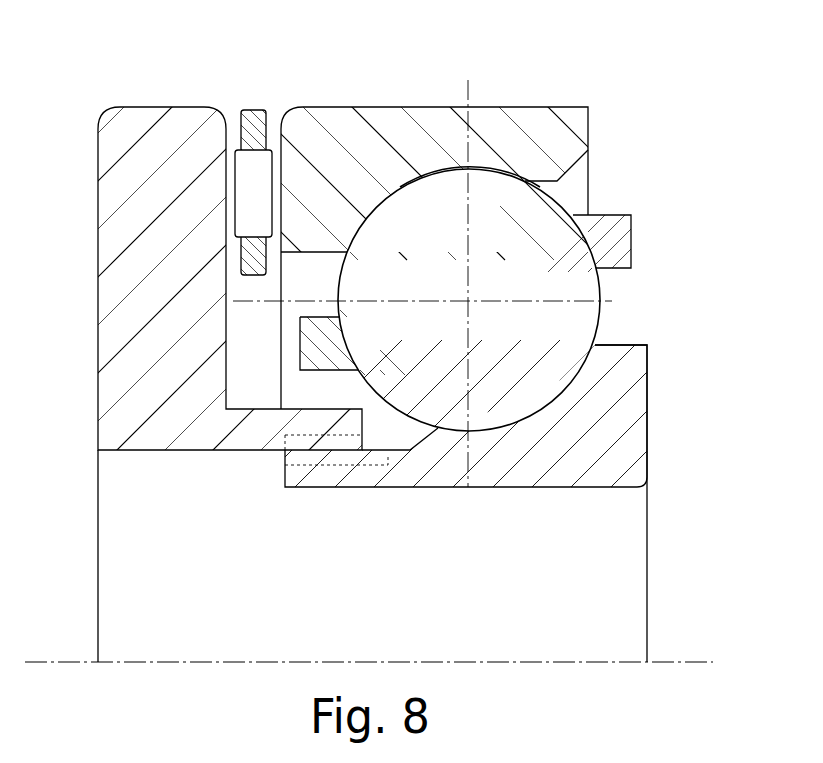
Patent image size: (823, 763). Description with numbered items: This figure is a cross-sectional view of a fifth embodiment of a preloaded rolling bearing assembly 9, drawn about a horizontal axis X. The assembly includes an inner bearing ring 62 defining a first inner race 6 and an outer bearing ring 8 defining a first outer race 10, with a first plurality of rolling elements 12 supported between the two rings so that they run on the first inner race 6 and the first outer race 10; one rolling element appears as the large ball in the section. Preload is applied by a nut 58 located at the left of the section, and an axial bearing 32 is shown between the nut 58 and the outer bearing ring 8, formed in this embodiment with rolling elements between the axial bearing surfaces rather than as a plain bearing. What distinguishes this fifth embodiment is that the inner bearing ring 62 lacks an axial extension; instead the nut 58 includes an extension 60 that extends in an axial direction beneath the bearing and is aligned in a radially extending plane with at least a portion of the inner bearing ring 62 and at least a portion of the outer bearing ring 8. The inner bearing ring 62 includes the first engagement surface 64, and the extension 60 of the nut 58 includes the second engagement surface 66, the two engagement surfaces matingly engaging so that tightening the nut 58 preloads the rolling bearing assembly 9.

The first inner race 6 is at (537, 417).
The outer bearing ring 8 is at (542, 125).
The rolling bearing assembly 9 is at (352, 110).
The first outer race 10 is at (453, 167).
The first plurality of rolling elements 12 is at (540, 235).
The axial bearing 32 is at (255, 113).
The nut 58 is at (130, 137).
The extension 60 is at (282, 436).
The inner bearing ring 62 is at (620, 410).
The first engagement surface 64 is at (340, 460).
The second engagement surface 66 is at (298, 447).
The axis X is at (688, 662).